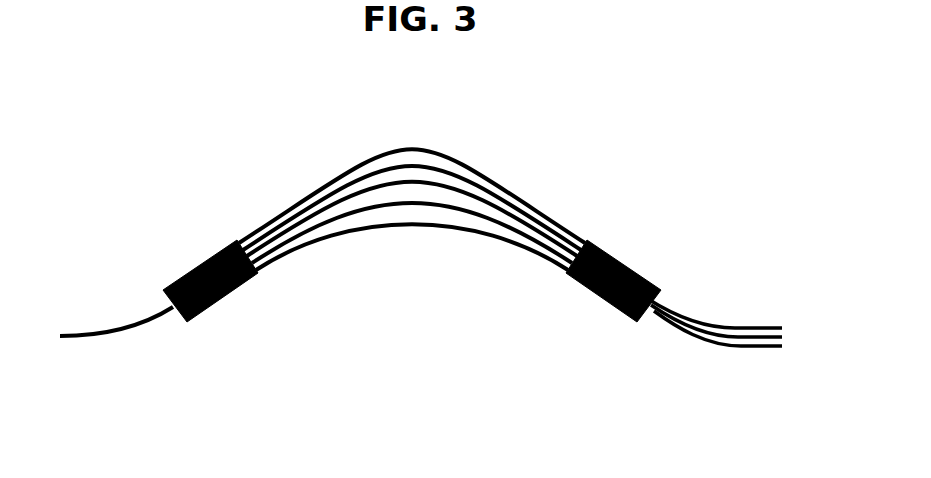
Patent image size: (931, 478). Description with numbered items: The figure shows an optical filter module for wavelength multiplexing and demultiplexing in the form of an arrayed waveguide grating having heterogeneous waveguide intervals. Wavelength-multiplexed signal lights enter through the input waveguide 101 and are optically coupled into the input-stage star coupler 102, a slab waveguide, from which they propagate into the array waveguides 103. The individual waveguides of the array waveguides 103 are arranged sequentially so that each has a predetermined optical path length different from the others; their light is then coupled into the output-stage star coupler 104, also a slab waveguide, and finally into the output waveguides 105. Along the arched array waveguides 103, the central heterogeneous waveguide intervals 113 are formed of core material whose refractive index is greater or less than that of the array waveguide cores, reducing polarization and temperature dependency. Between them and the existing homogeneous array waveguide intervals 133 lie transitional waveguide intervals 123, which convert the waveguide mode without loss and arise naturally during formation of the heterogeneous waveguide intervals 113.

The input waveguide 101 is at (60, 353).
The input-stage star coupler 102 is at (258, 290).
The array waveguides 103 is at (563, 290).
The output-stage star coupler 104 is at (646, 327).
The output waveguides 105 is at (783, 362).
The heterogeneous waveguide intervals 113 is at (430, 265).
The transitional waveguide intervals 123 is at (492, 270).
The homogeneous array waveguide intervals 133 is at (552, 295).